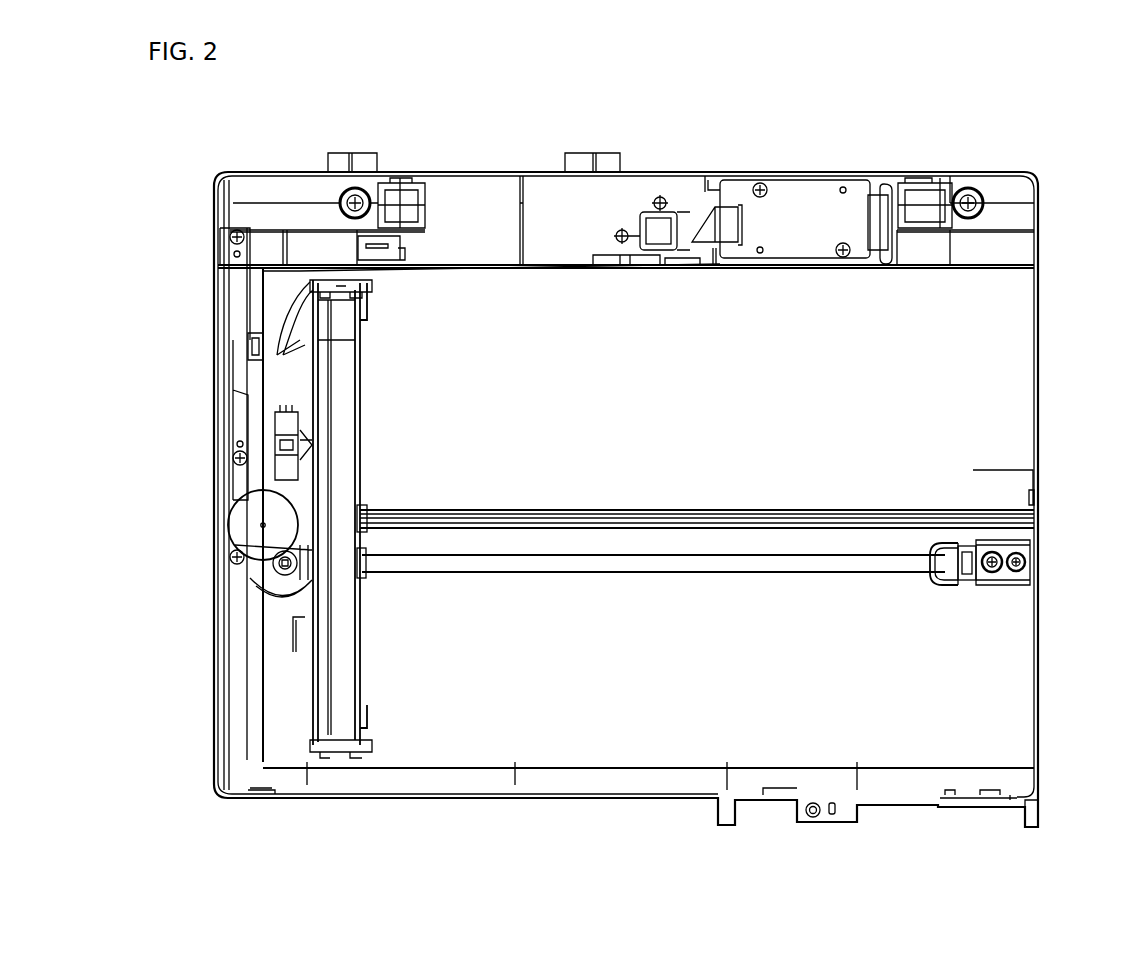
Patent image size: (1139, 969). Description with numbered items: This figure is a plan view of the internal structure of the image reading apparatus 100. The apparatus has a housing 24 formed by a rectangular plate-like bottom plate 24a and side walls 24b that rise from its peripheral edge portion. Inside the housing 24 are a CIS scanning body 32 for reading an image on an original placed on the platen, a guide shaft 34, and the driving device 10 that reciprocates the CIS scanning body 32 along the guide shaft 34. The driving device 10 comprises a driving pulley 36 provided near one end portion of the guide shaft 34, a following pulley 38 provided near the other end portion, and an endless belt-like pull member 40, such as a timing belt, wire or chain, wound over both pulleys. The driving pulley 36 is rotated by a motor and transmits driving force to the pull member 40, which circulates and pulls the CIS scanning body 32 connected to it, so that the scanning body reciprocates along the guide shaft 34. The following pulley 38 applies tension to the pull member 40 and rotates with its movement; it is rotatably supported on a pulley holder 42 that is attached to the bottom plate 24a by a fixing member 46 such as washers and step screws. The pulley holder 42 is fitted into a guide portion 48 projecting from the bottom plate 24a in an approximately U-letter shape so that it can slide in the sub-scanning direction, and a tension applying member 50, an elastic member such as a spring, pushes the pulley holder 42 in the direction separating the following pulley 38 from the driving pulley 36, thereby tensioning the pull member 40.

The image reading apparatus 100 is at (336, 84).
The driving device 10 is at (778, 582).
The housing 24 is at (1048, 238).
The bottom plate 24a is at (1012, 352).
The side walls 24b is at (556, 800).
The CIS scanning body 32 is at (340, 405).
The guide shaft 34 is at (637, 517).
The driving pulley 36 is at (285, 572).
The following pulley 38 is at (1016, 572).
The pull member 40 is at (660, 574).
The pulley holder 42 is at (970, 580).
The fixing member 46 is at (992, 555).
The guide portion 48 is at (948, 588).
The tension applying member 50 is at (952, 560).